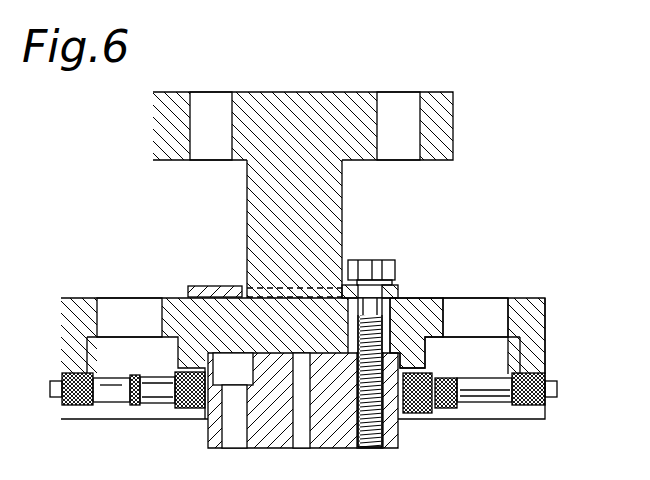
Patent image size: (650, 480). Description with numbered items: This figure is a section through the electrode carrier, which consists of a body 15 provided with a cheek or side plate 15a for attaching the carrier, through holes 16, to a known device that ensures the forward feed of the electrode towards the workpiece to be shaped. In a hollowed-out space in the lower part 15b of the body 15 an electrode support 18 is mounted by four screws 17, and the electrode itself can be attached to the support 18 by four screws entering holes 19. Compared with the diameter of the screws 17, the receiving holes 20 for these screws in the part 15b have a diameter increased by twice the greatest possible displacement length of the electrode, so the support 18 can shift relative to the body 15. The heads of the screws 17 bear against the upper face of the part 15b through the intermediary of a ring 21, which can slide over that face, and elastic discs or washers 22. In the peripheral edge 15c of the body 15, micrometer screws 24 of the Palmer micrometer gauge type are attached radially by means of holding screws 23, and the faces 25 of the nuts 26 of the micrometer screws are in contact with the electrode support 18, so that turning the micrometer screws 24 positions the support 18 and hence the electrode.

The body 15 is at (339, 220).
The cheek or side plate 15a is at (438, 148).
The lower part of the body 15b is at (427, 297).
The peripheral edge of the body 15c is at (538, 350).
The holes 16 is at (215, 107).
The screws 17 is at (392, 258).
The electrode support 18 is at (385, 433).
The holes 19 is at (232, 422).
The receiving holes 20 is at (388, 332).
The ring 21 is at (403, 290).
The elastic discs or washers 22 is at (362, 262).
The holding screws 23 is at (75, 420).
The micrometer screws 24 is at (110, 391).
The faces of the nuts 25 is at (412, 418).
The nuts 26 is at (448, 412).